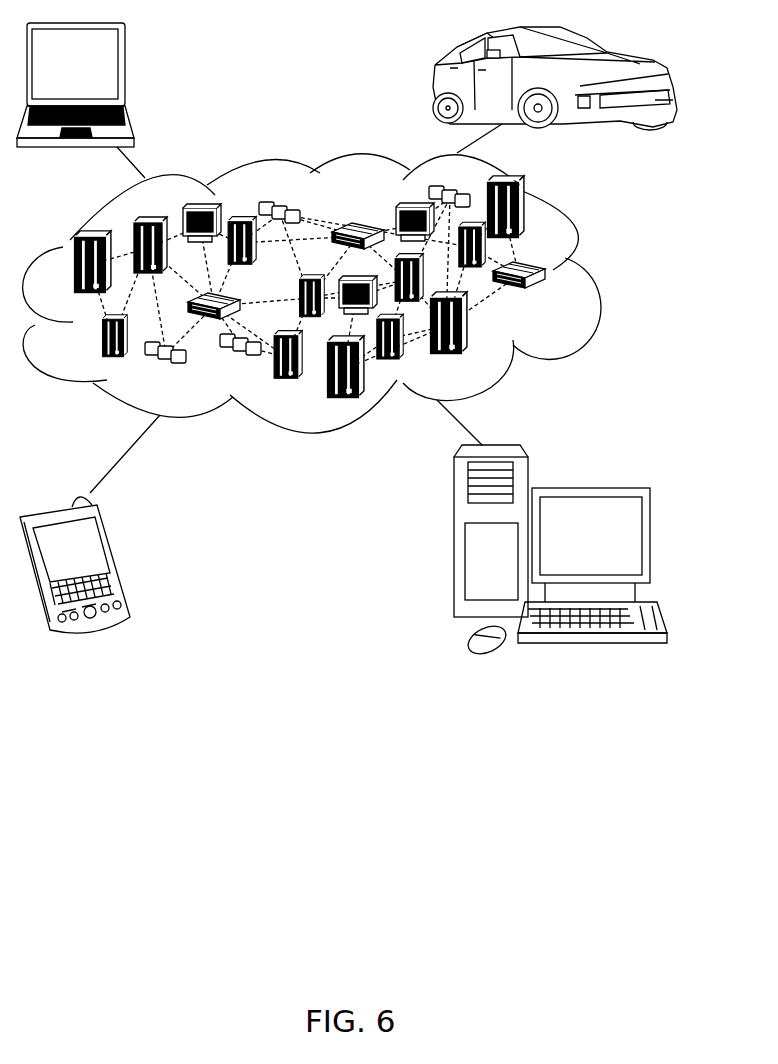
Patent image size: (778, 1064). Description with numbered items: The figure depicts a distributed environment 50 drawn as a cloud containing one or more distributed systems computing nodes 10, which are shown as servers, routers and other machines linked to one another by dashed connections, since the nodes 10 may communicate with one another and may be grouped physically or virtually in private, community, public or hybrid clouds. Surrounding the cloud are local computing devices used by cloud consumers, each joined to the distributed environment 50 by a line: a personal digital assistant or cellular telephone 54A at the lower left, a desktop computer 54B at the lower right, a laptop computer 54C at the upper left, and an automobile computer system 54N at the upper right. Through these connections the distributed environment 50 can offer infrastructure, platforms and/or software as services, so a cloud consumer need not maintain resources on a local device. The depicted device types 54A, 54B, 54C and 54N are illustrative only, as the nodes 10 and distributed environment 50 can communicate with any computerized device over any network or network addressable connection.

The distributed systems computing nodes 10 is at (550, 294).
The distributed environment 50 is at (590, 273).
The personal digital assistant (PDA) or cellular telephone 54A is at (120, 556).
The desktop computer 54B is at (588, 488).
The laptop computer 54C is at (127, 68).
The automobile computer system 54N is at (432, 72).